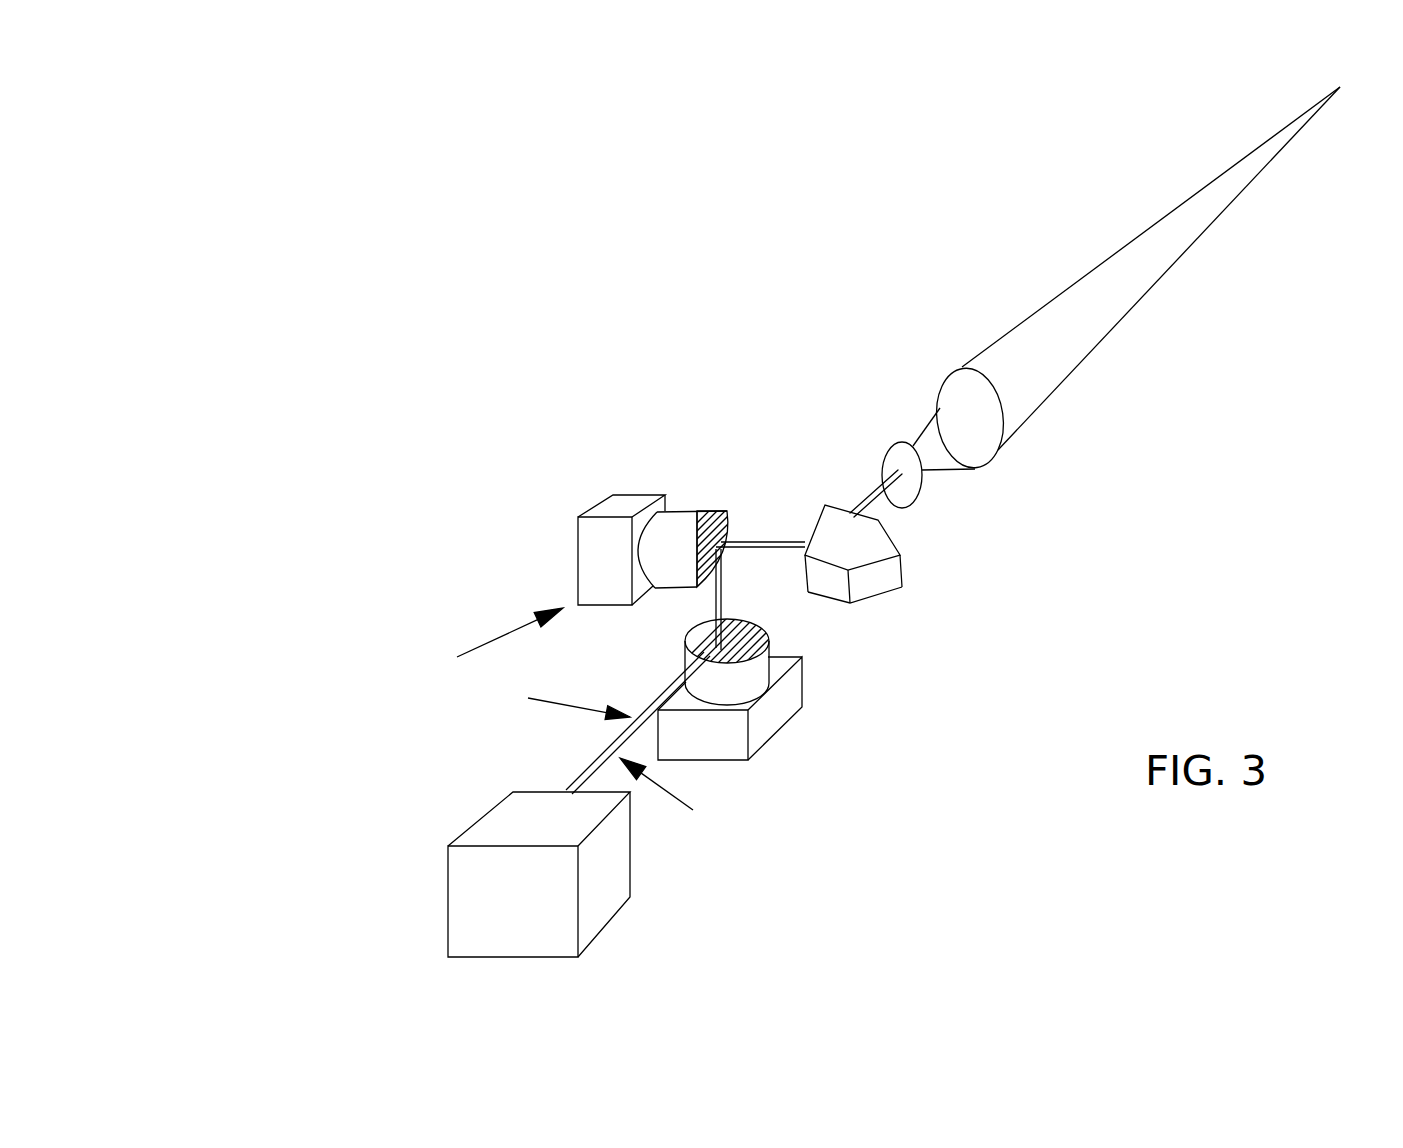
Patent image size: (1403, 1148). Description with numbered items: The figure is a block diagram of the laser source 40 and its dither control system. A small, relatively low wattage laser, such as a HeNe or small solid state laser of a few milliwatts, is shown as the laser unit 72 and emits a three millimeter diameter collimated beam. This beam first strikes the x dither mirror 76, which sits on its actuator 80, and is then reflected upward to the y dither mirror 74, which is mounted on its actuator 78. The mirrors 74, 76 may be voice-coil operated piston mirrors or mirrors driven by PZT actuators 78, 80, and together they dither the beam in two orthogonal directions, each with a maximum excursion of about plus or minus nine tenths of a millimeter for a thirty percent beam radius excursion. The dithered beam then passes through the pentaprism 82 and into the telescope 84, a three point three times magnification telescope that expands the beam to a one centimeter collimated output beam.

The laser source 40 is at (540, 278).
The laser source 72 is at (622, 909).
The y dither mirror 74 is at (683, 508).
The x dither mirror 76 is at (758, 622).
The PZT actuator 78 is at (622, 495).
The PZT actuator 80 is at (780, 730).
The pentaprism 82 is at (893, 542).
The telescope 84 is at (1103, 262).